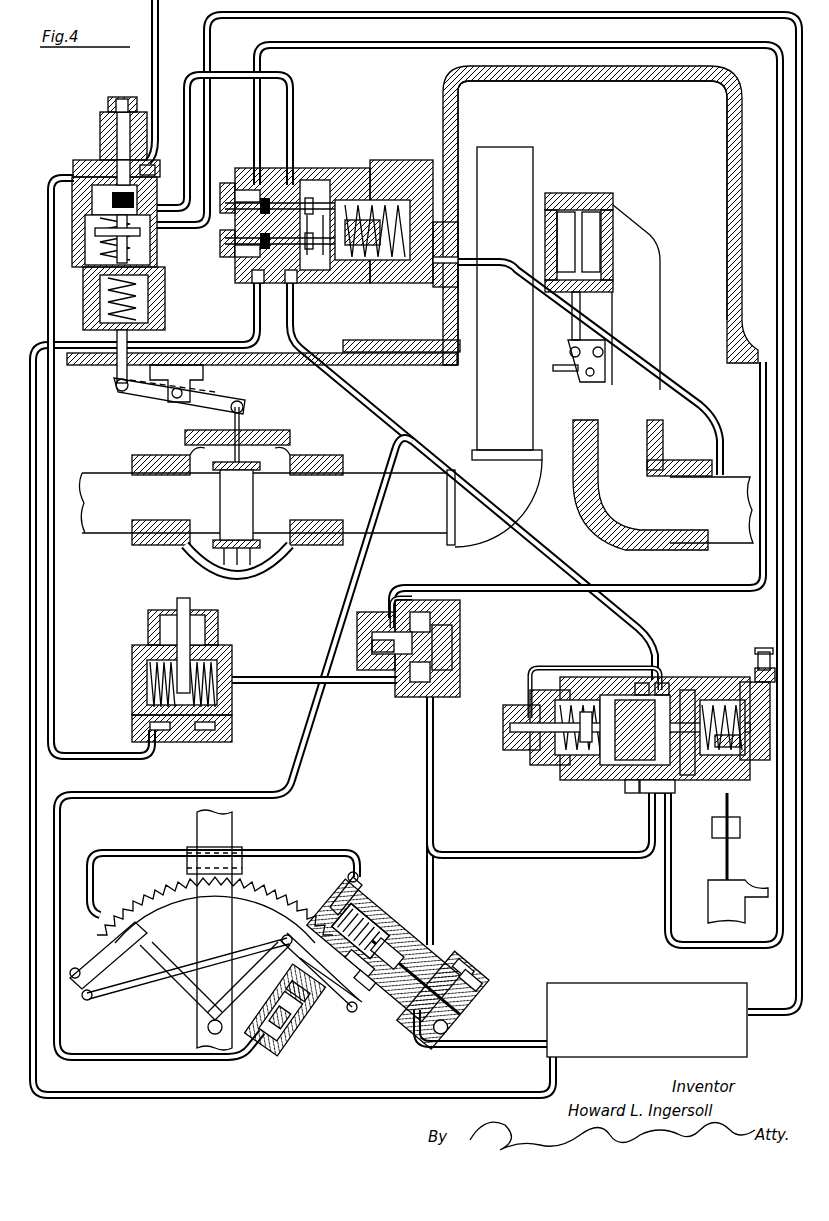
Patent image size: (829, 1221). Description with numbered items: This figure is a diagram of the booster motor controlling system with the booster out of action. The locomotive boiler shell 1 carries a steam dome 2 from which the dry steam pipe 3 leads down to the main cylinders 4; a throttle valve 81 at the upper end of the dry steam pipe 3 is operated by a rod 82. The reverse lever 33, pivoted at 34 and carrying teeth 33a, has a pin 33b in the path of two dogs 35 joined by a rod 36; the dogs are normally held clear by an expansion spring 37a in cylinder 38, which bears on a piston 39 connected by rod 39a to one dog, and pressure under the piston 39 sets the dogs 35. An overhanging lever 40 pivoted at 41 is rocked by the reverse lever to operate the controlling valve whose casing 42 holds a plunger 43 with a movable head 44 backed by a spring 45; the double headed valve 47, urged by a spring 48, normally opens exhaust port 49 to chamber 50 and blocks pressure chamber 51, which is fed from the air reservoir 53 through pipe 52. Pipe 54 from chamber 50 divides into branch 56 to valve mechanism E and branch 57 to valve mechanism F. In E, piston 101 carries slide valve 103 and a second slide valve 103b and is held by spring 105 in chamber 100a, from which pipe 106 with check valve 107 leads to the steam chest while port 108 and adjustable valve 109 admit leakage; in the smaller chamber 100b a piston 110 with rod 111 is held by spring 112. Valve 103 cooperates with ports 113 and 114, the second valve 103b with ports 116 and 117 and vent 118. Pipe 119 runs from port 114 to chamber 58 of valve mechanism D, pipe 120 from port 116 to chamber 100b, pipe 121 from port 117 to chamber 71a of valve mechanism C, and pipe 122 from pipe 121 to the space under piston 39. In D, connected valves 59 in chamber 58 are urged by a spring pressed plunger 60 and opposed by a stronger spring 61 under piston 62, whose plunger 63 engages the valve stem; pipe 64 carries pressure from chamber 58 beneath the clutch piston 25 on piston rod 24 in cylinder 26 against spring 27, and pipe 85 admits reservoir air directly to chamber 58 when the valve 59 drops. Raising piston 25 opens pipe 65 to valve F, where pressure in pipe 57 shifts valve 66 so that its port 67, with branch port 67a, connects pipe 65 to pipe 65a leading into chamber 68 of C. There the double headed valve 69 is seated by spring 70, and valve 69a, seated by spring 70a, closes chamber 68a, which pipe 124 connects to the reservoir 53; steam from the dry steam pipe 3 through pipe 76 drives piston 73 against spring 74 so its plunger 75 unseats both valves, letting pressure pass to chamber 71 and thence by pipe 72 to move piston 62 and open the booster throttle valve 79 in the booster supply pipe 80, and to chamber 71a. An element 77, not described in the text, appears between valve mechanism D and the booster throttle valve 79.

The shell of locomotive boiler 1 is at (372, 342).
The steam dome 2 is at (470, 95).
The dry steam pipe 3 is at (728, 475).
The main cylinders 4 is at (718, 895).
The piston rod 24 is at (190, 604).
The piston 25 is at (232, 730).
The cylinder 26 is at (176, 683).
The spring 27 is at (148, 622).
The reverse lever 33 is at (233, 822).
The teeth 33a is at (155, 892).
The pin or projection 33b is at (215, 1015).
The pivot 34 is at (208, 1028).
The dogs 35 is at (95, 955).
The rod 36 is at (125, 985).
The expansion spring 37a is at (325, 1015).
The cylinder 38 is at (278, 986).
The piston 39 is at (267, 986).
The rod 39a is at (322, 980).
The overhanging extension 40 is at (312, 852).
The pivot 41 is at (358, 872).
The casing 42 is at (409, 939).
The plunger 43 is at (332, 902).
The movable head 44 is at (393, 931).
The spring 45 is at (366, 923).
The double headed valve 47 is at (442, 925).
The spring 48 is at (447, 949).
The exhaust port 49 is at (345, 980).
The chamber 50 is at (457, 927).
The pressure chamber 51 is at (361, 1001).
The pipe 52 is at (470, 1043).
The air-pressure reservoir 53 is at (647, 1020).
The pipe 54 is at (432, 885).
The pipe 56 is at (575, 853).
The pipe 57 is at (435, 765).
The valve chamber 58 is at (108, 235).
The connected valves 59 is at (150, 172).
The spring pressed plunger 60 is at (107, 108).
The spring 61 is at (165, 305).
The piston 62 is at (170, 270).
The spring-pressed plunger 63 is at (95, 240).
The pipe 64 is at (60, 187).
The pipe 65 is at (280, 683).
The pipe 65a is at (445, 92).
The valve 66 is at (428, 652).
The port 67 is at (385, 660).
The branch port 67a is at (400, 612).
The chamber 68 is at (245, 185).
The chamber 68a is at (243, 257).
The double headed valve 69 is at (310, 180).
The double headed valve 69a is at (258, 290).
The spring 70 is at (225, 188).
The spring 70a is at (222, 240).
The chamber 71 is at (268, 185).
The chamber 71a is at (292, 285).
The pipe 72 is at (300, 140).
The piston 73 is at (400, 170).
The spring 74 is at (326, 232).
The spring-pressed plunger 75 is at (350, 275).
The pipe 76 is at (680, 390).
The lever 77 is at (135, 395).
The booster throttle valve 79 is at (262, 500).
The booster supply pipe 80 is at (310, 347).
The throttle valve 81 is at (590, 195).
The rod 82 is at (565, 373).
The pipe 85 is at (160, 60).
The air tight chamber 100a is at (731, 747).
The smaller chamber 100b is at (585, 712).
The piston 101 is at (722, 723).
The yielding slide valve 103 is at (635, 787).
The piston 103b is at (620, 695).
The spring 105 is at (755, 760).
The pipe 106 is at (730, 805).
The check valve 107 is at (740, 830).
The port 108 is at (775, 668).
The adjustable valve 109 is at (764, 650).
The piston 110 is at (540, 740).
The rod 111 is at (515, 712).
The spring 112 is at (578, 755).
The port 113 is at (647, 723).
The port 114 is at (675, 790).
The port 116 is at (662, 683).
The port 117 is at (688, 690).
The vent 118 is at (642, 683).
The pipe 119 is at (372, 22).
The pipe 120 is at (548, 667).
The pipe 121 is at (295, 322).
The pipe 122 is at (398, 452).
The pipe 124 is at (253, 305).